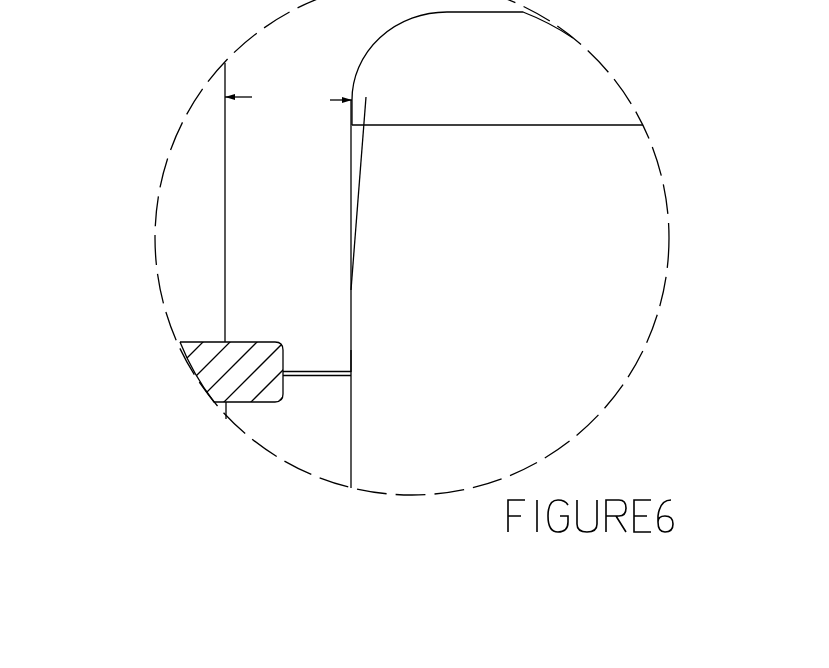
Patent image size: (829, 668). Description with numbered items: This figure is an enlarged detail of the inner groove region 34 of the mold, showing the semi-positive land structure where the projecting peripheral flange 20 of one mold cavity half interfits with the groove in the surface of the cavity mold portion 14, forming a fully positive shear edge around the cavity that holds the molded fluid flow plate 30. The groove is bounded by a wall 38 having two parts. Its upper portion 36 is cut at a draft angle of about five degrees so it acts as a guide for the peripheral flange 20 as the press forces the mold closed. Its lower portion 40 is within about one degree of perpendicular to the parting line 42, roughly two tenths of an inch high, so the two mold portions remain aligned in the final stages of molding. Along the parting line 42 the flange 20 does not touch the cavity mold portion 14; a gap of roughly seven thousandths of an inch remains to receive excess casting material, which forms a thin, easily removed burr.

The cavity mold portion 14 is at (497, 223).
The peripheral flange 20 is at (262, 241).
The fluid flow plate 30 is at (195, 378).
The inner groove region 34 is at (605, 70).
The upper portion of wall 36 is at (362, 200).
The wall 38 is at (355, 298).
The lower portion of wall 40 is at (355, 360).
The parting line 42 is at (315, 375).